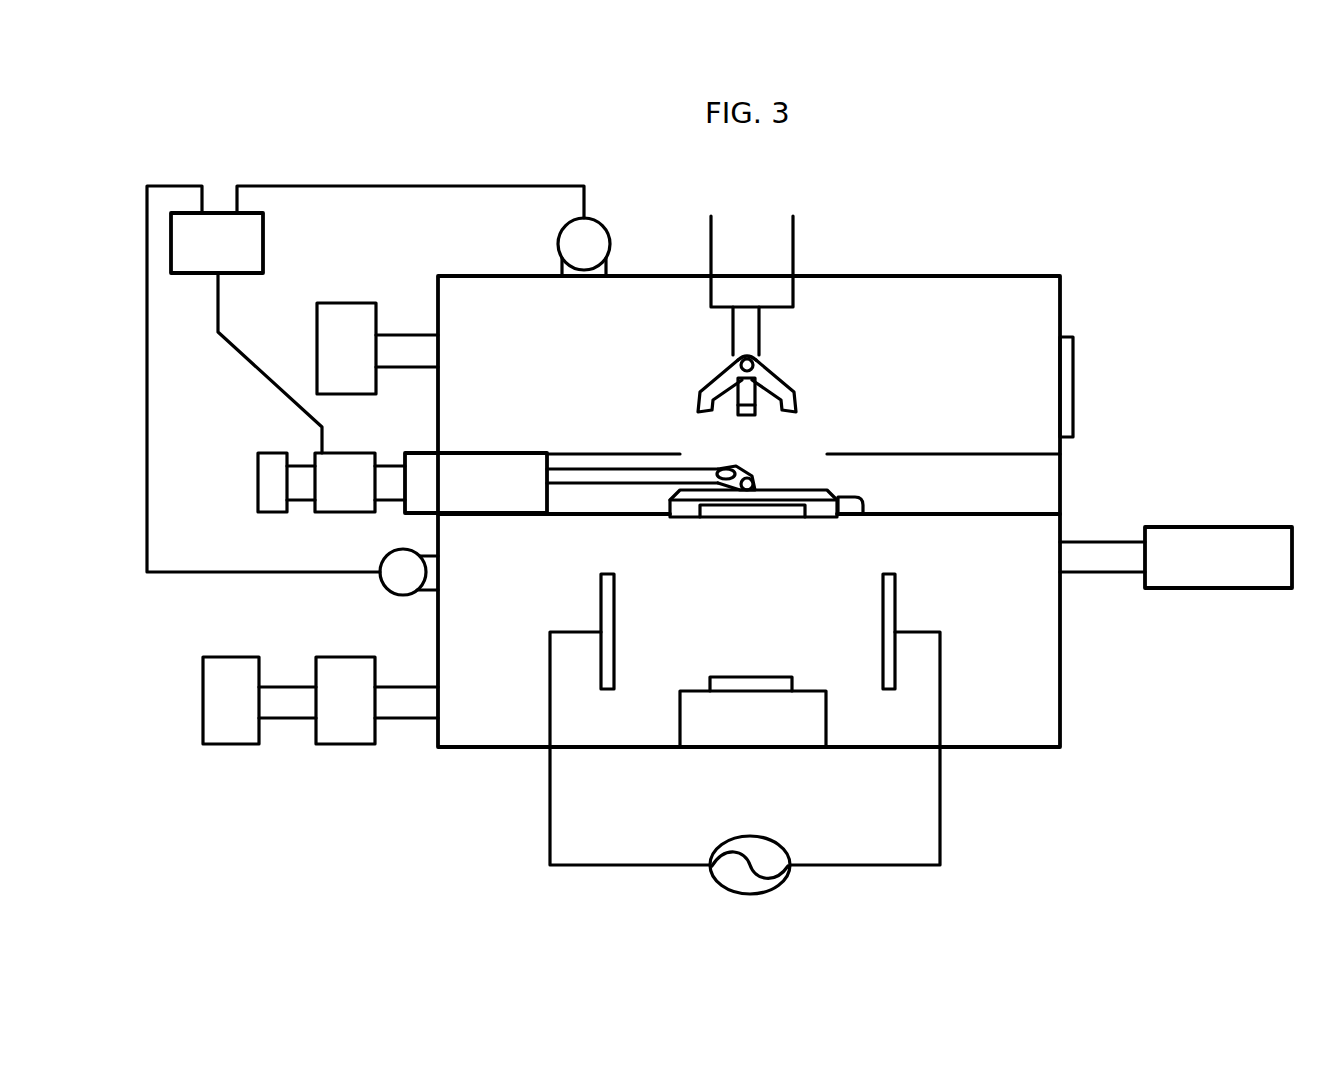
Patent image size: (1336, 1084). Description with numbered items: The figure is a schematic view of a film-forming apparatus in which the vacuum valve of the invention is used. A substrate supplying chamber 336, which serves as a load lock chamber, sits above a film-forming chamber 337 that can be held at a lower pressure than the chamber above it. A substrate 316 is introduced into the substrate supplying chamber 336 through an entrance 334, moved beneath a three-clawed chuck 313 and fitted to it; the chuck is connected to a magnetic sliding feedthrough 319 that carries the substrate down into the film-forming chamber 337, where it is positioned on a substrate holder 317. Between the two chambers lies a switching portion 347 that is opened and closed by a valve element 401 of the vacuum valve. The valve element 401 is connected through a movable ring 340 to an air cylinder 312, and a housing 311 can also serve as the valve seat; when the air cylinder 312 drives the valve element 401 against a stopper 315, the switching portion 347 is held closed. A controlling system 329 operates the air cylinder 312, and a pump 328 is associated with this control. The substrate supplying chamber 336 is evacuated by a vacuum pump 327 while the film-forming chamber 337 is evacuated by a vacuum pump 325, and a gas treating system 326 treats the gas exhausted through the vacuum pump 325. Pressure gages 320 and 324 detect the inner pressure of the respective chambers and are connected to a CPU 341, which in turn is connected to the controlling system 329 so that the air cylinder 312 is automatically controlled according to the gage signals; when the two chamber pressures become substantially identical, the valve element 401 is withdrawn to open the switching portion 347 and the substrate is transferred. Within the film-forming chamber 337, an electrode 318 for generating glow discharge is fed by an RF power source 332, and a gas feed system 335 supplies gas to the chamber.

The housing 311 is at (592, 453).
The air cylinder 312 is at (503, 458).
The three-clawed chuck 313 is at (782, 380).
The stopper 315 is at (865, 505).
The substrate 316 is at (733, 680).
The substrate holder 317 is at (808, 700).
The electrode 318 is at (615, 598).
The magnetic sliding feedthrough 319 is at (783, 243).
The pressure gage 320 is at (602, 230).
The pressure gage 324 is at (398, 578).
The vacuum pump 325 is at (356, 745).
The gas treating system 326 is at (232, 745).
The vacuum pump 327 is at (357, 312).
The pump 328 is at (273, 455).
The controlling system 329 is at (385, 437).
The RF power source 332 is at (790, 860).
The entrance 334 is at (1073, 383).
The gas feed system 335 is at (1226, 535).
The substrate supplying chamber 336 is at (1010, 290).
The film-forming chamber 337 is at (1015, 745).
The movable ring 340 is at (737, 457).
The CPU 341 is at (263, 240).
The switching portion 347 is at (760, 508).
The valve element 401 is at (792, 486).